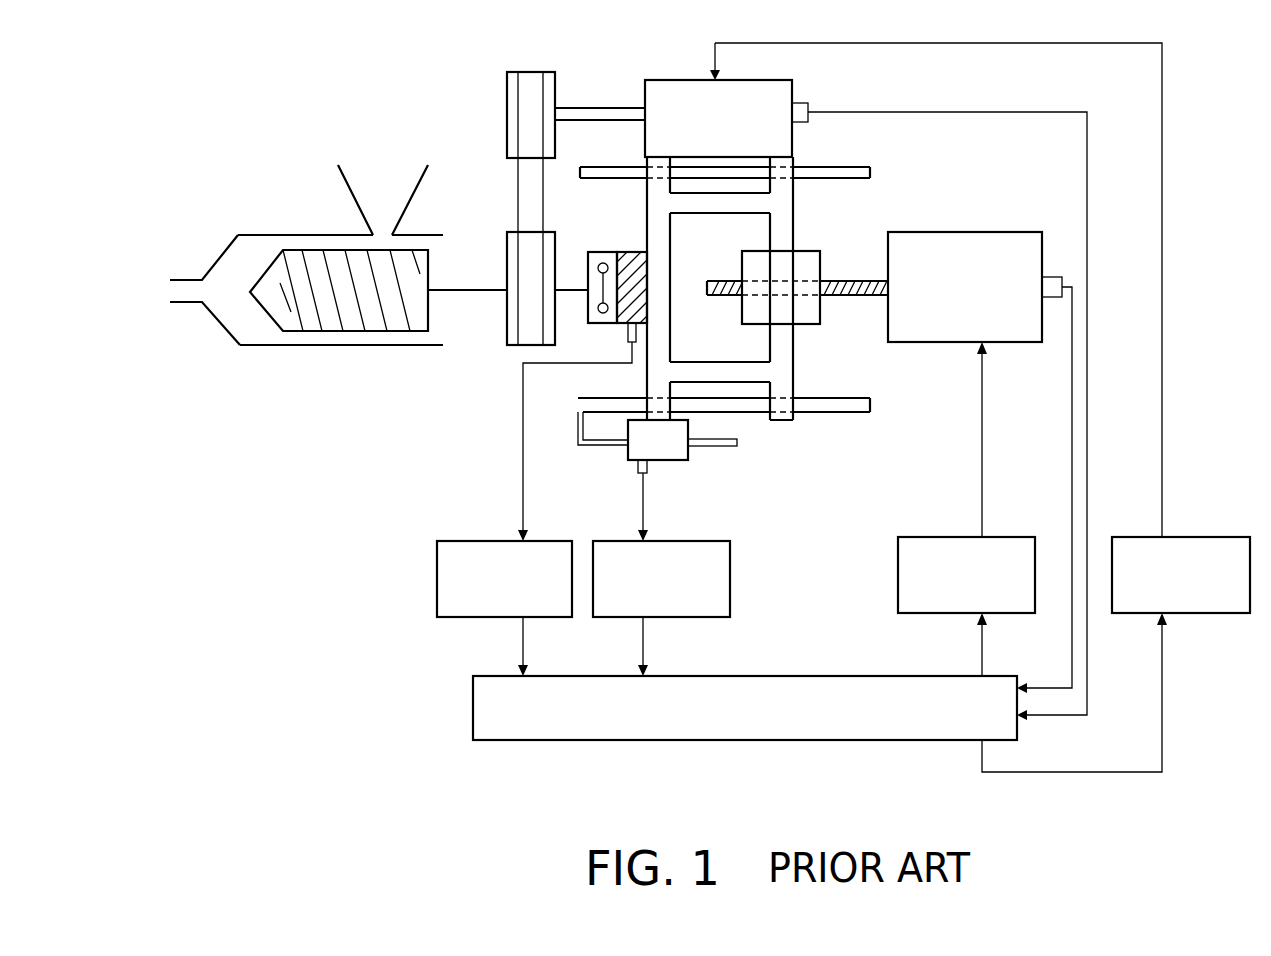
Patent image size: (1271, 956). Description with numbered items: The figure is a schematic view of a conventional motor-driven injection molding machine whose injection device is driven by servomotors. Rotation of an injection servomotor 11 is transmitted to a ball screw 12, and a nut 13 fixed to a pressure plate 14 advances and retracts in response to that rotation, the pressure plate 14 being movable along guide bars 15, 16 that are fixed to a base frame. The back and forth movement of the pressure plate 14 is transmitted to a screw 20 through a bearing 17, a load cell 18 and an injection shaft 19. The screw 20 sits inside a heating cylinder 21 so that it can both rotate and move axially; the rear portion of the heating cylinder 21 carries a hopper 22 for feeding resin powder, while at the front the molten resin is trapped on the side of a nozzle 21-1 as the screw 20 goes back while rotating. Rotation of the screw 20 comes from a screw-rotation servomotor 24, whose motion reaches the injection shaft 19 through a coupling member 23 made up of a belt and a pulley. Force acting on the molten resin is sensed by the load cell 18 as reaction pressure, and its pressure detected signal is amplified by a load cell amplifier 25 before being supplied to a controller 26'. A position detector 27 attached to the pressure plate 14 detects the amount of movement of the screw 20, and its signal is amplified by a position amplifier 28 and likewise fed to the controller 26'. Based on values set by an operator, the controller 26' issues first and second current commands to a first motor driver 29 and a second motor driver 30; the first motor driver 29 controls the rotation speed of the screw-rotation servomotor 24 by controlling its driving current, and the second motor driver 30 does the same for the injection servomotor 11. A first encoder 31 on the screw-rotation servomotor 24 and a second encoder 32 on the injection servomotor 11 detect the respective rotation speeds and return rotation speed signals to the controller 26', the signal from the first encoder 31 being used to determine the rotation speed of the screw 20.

The injection servomotor 11 is at (1010, 232).
The ball screw 12 is at (853, 280).
The nut 13 is at (810, 250).
The pressure plate 14 is at (785, 352).
The guide bar 15 is at (870, 172).
The guide bar 16 is at (845, 412).
The bearing 17 is at (587, 258).
The load cell 18 is at (630, 250).
The injection shaft 19 is at (473, 294).
The screw 20 is at (402, 318).
The heating cylinder 21 is at (287, 348).
The nozzle 21-1 is at (185, 305).
The hopper 22 is at (341, 187).
The coupling member 23 is at (518, 186).
The screw-rotation servomotor 24 is at (786, 83).
The load cell amplifier 25 is at (437, 580).
The controller 26' is at (704, 708).
The position detector 27 is at (678, 457).
The position amplifier 28 is at (730, 580).
The first motor driver 29 is at (1215, 537).
The second motor driver 30 is at (898, 578).
The first encoder 31 is at (807, 122).
The second encoder 32 is at (1050, 277).